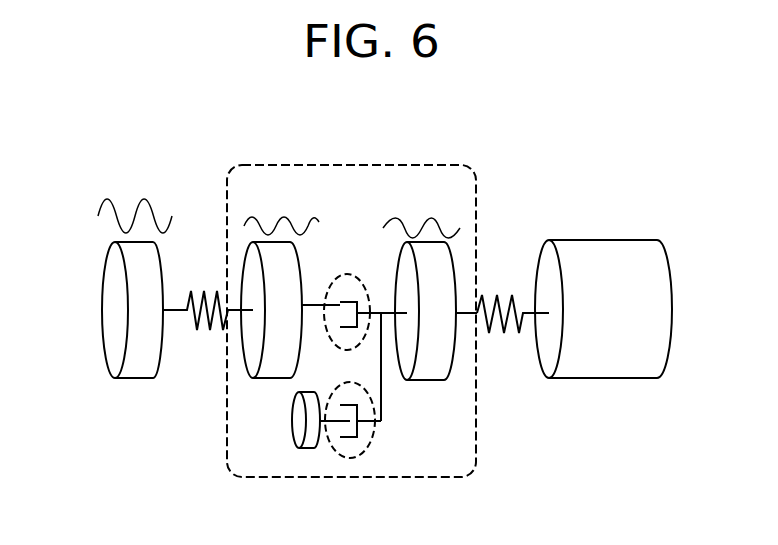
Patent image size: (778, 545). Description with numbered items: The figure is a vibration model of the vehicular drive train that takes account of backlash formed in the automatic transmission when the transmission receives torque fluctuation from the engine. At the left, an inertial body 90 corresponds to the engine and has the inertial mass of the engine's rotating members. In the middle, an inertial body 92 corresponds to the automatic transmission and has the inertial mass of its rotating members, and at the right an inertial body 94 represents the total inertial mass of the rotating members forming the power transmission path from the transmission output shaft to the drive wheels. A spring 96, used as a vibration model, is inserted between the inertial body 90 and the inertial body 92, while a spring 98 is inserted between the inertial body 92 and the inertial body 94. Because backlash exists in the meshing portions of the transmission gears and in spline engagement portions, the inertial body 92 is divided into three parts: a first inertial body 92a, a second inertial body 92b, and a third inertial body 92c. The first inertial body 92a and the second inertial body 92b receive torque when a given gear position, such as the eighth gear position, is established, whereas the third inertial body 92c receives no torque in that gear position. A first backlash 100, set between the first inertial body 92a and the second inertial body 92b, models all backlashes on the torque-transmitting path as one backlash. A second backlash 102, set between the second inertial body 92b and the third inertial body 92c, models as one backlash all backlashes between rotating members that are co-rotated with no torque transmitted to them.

The inertial body 90 is at (135, 362).
The inertial body 92 is at (380, 165).
The first inertial body 92a is at (278, 368).
The second inertial body 92b is at (440, 265).
The third inertial body 92c is at (310, 435).
The inertial body 94 is at (592, 255).
The spring 96 is at (188, 320).
The spring 98 is at (518, 292).
The first backlash 100 is at (352, 273).
The second backlash 102 is at (368, 455).